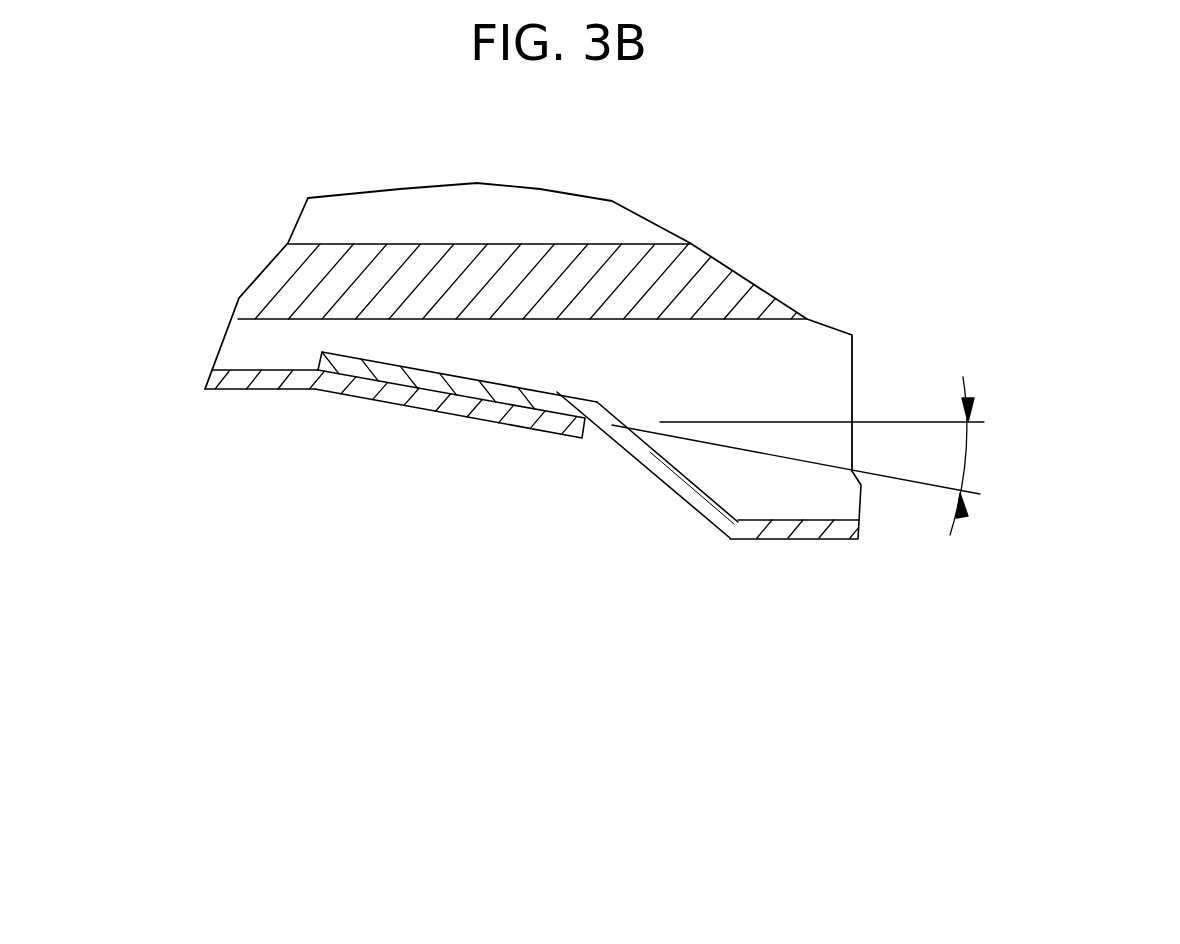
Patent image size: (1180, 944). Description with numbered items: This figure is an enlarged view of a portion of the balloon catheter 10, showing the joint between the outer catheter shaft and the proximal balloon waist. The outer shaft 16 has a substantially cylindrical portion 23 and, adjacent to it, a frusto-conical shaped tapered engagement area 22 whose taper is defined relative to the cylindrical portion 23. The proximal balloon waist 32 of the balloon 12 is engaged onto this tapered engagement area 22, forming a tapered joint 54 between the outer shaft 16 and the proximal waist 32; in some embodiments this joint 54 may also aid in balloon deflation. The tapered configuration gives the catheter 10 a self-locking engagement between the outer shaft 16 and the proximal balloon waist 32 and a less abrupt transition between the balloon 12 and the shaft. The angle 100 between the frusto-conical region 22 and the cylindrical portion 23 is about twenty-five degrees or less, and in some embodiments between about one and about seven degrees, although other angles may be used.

The catheter 10 is at (377, 498).
The balloon 12 is at (723, 445).
The outer shaft 16 is at (360, 413).
The tapered engagement area 22 is at (484, 421).
The substantially cylindrical portion 23 is at (255, 390).
The proximal balloon waist 32 is at (545, 393).
The tapered joint 54 is at (437, 392).
The angle 100 is at (967, 462).